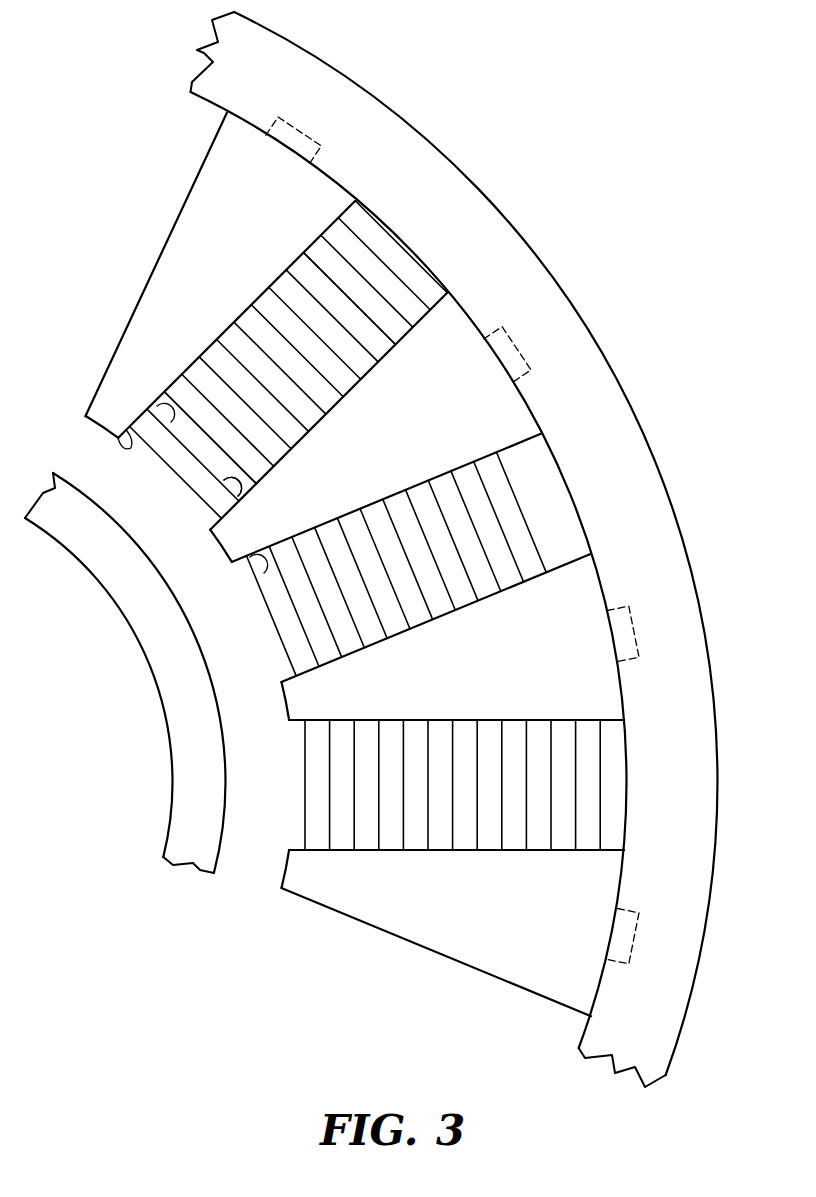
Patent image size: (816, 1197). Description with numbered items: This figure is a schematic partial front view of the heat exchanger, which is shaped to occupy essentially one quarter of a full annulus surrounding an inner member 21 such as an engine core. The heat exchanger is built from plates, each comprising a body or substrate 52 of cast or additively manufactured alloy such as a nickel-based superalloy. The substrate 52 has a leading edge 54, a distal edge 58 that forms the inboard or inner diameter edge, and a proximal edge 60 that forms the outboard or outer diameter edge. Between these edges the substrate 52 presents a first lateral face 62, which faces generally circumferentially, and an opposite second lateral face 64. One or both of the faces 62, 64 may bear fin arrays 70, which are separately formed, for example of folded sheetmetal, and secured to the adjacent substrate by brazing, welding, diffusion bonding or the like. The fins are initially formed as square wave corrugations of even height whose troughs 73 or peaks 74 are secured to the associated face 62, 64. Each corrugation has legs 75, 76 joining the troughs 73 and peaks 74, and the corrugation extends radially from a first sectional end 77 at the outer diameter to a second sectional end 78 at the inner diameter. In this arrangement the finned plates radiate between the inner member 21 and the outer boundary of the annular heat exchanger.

The inner member 21 is at (173, 706).
The body or substrate 52 is at (395, 450).
The leading edge 54 is at (335, 483).
The distal edge 58 is at (230, 556).
The proximal edge 60 is at (526, 398).
The first lateral face 62 is at (214, 498).
The second lateral face 64 is at (270, 575).
The fin array 70 is at (356, 343).
The troughs 73 is at (277, 470).
The peaks 74 is at (170, 432).
The leg 75 is at (403, 298).
The leg 76 is at (347, 258).
The first sectional end 77 is at (440, 305).
The second sectional end 78 is at (131, 448).